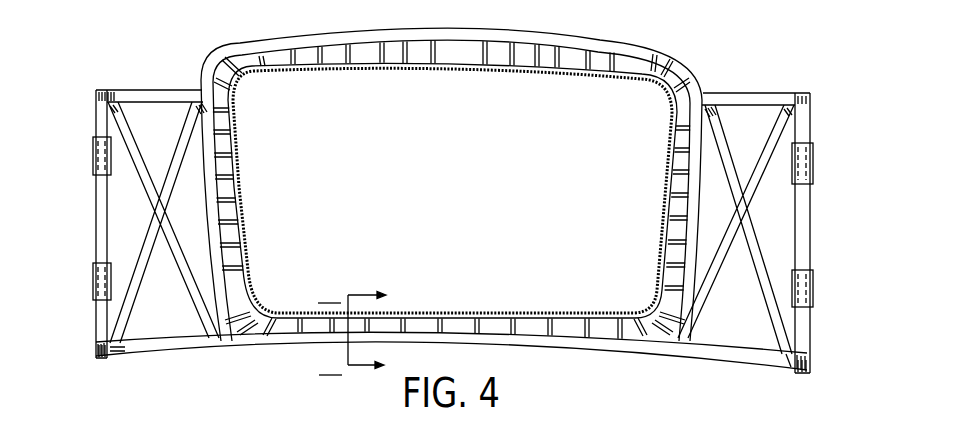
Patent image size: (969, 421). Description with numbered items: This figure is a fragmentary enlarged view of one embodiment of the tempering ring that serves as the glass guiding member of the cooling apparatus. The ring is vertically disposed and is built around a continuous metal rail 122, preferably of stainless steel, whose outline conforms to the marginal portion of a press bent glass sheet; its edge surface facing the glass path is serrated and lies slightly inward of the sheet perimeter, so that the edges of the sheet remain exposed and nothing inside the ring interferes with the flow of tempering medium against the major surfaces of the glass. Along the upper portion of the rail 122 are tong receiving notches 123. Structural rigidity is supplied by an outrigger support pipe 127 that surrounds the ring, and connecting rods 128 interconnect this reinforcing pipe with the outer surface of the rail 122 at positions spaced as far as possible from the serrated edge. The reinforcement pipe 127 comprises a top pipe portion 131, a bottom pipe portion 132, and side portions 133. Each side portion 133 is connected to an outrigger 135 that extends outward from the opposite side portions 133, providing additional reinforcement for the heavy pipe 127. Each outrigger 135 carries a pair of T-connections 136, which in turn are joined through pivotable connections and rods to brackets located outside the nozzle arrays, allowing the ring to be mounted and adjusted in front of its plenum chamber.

The metal rail 122 is at (373, 70).
The tong receiving notches 123 is at (318, 72).
The outrigger support pipe 127 is at (280, 349).
The connecting rods 128 is at (238, 238).
The top pipe portion 131 is at (242, 43).
The bottom pipe portion 132 is at (610, 341).
The side portions 133 is at (212, 241).
The outrigger 135 is at (157, 89).
The T-connections 136 is at (91, 153).